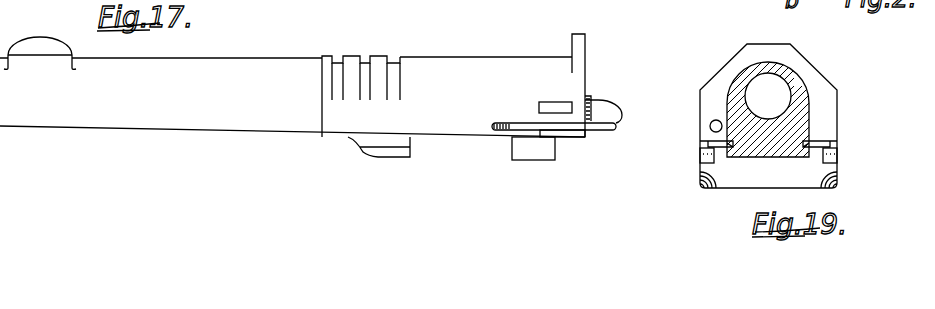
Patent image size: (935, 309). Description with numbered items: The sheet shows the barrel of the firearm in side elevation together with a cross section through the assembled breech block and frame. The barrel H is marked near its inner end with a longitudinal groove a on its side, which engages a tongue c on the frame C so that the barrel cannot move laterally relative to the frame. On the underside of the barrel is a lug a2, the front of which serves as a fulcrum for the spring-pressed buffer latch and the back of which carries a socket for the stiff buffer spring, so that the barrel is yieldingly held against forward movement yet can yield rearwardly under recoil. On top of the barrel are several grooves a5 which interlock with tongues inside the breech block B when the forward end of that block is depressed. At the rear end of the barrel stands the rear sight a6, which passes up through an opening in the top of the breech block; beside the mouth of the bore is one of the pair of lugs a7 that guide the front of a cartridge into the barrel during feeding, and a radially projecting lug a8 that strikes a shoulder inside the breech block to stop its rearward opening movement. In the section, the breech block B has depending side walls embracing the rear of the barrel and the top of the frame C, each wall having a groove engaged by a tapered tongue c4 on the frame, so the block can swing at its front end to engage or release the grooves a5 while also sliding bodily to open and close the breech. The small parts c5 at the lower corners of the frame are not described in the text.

In FIG. 17, the barrel H is at (292, 87).
In FIG. 19, the barrel H is at (783, 74).
In FIG. 17, the longitudinal grooves a is at (387, 147).
In FIG. 17, the lug a2 is at (530, 152).
In FIG. 17, the grooves a5 is at (391, 59).
In FIG. 19, the grooves a5 is at (760, 64).
In FIG. 17, the rear sight a6 is at (585, 40).
In FIG. 17, the lugs a7 is at (612, 106).
In FIG. 17, the radially projecting lugs a8 is at (558, 101).
In FIG. 19, the breech block B is at (815, 62).
In FIG. 19, the frame C is at (748, 182).
In FIG. 19, the tongues c is at (720, 143).
In FIG. 19, the tongues c4 is at (877, 147).
In FIG. 19, the corner fillet c5 is at (860, 175).